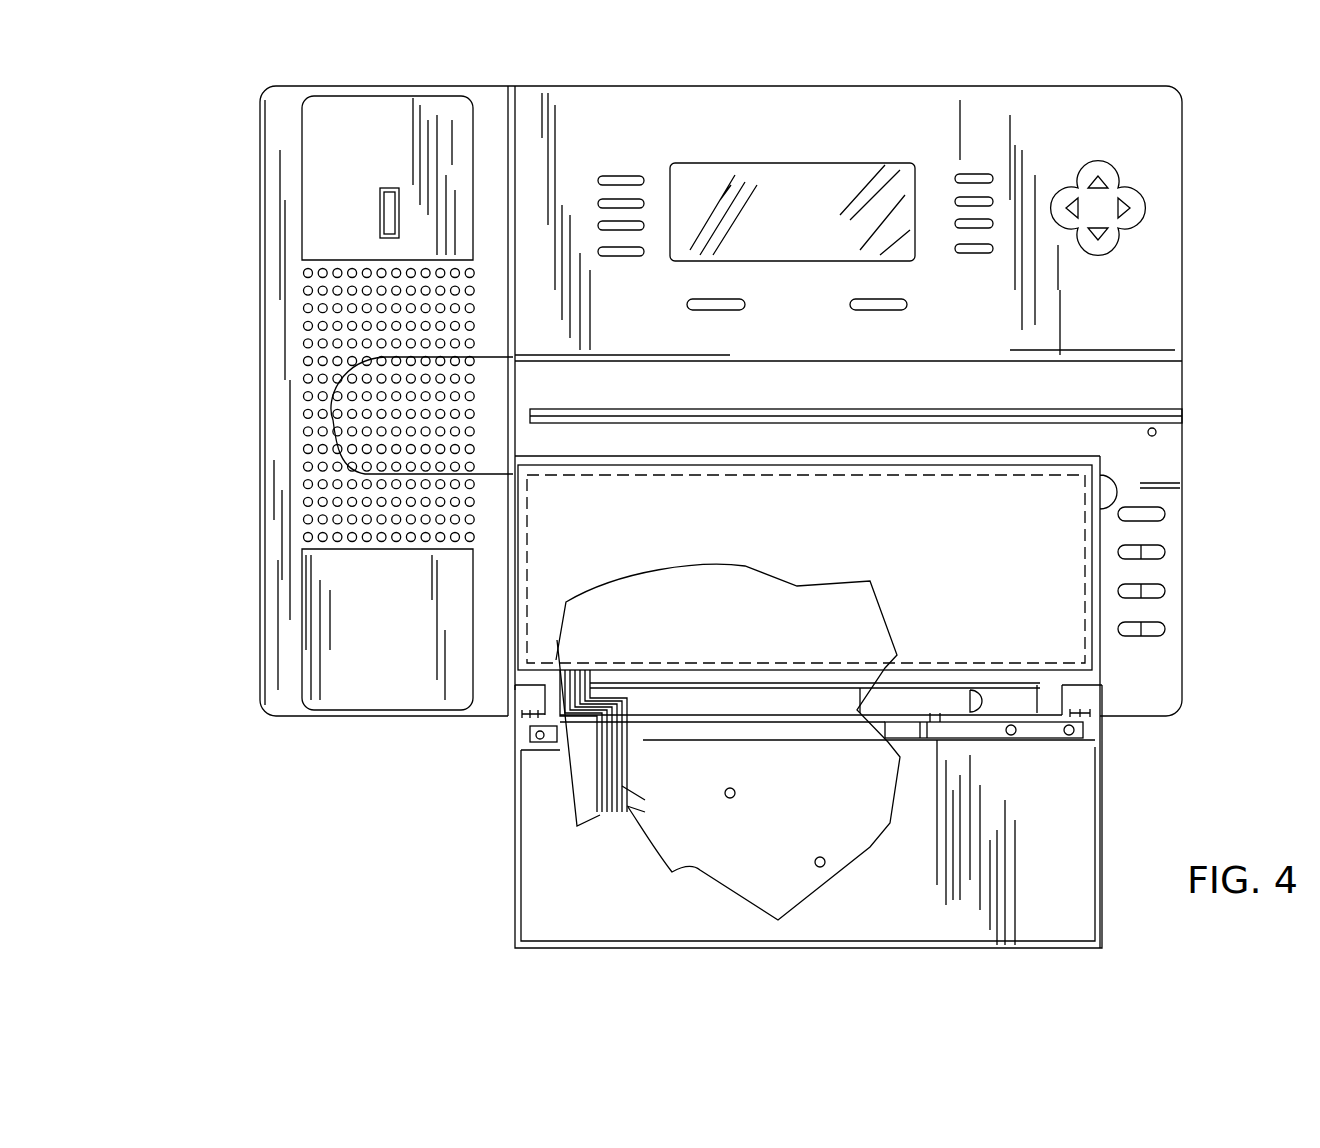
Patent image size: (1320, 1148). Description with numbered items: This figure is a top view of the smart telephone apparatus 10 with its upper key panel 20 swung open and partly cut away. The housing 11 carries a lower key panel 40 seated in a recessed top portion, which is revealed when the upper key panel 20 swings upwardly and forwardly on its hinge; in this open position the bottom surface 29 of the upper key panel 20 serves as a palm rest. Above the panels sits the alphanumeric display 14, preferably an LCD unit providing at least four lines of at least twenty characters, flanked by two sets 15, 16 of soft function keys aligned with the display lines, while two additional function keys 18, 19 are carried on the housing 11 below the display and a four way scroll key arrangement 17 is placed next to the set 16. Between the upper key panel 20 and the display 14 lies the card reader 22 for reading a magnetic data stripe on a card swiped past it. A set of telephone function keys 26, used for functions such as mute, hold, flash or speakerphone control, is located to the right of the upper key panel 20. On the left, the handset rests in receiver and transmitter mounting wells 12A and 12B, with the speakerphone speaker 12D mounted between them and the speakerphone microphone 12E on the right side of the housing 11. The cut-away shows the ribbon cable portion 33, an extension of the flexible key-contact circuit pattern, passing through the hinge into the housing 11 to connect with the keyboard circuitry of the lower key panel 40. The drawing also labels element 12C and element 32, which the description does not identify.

The smart telephone apparatus 10 is at (1035, 81).
The housing 11 is at (903, 120).
The receiver mounting well 12A is at (328, 168).
The transmitter mounting well 12B is at (340, 628).
The switch 12C is at (365, 222).
The speakerphone speaker 12D is at (320, 390).
The speakerphone microphone 12E is at (1157, 432).
The alphanumeric display 14 is at (830, 135).
The set of soft function keys 15 is at (593, 218).
The set of soft function keys 16 is at (990, 198).
The four way scroll key arrangement 17 is at (1143, 208).
The function key 18 is at (713, 303).
The function key 19 is at (900, 300).
The upper key panel 20 is at (1072, 857).
The card reader 22 is at (1025, 410).
The set of telephone function keys 26 is at (1150, 508).
The bottom surface of upper key panel 29 is at (1075, 775).
The paper sheet 32 is at (682, 832).
The ribbon cable portion 33 is at (600, 773).
The lower key panel 40 is at (1055, 545).